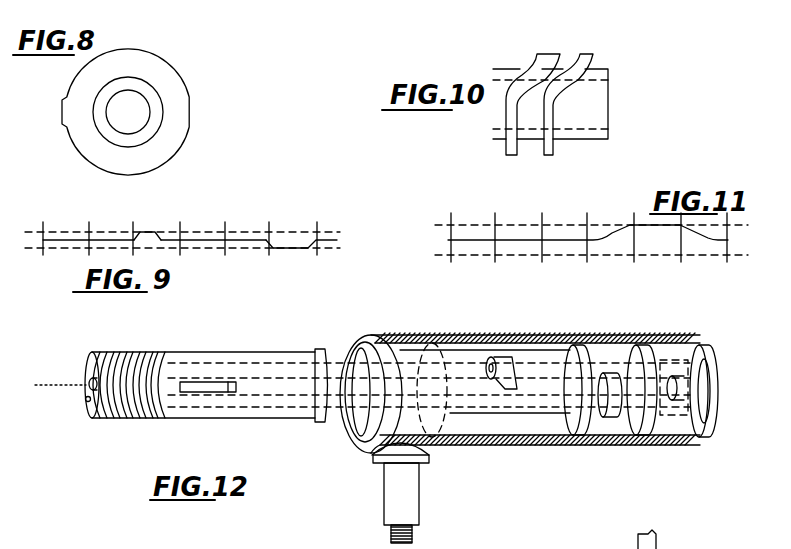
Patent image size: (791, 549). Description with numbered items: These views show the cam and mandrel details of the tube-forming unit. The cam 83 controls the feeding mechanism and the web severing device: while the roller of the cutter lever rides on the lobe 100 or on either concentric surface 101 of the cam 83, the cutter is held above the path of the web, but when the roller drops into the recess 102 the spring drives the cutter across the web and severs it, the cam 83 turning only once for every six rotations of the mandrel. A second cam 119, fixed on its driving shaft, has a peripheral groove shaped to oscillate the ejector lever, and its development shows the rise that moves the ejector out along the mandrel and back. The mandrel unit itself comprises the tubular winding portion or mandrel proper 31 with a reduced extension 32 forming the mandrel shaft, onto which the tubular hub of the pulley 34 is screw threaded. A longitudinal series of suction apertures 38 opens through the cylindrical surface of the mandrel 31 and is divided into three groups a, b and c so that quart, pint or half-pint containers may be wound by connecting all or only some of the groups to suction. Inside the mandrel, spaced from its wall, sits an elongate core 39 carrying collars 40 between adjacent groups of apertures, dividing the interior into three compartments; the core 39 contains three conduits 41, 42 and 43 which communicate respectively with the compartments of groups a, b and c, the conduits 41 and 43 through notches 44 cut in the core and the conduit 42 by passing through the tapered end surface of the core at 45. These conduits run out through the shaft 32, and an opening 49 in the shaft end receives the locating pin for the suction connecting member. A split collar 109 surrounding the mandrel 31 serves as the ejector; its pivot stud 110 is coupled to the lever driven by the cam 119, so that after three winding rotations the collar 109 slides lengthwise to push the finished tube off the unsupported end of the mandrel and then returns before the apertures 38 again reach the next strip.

In FIG. 8, the lobe 100 is at (63, 111).
In FIG. 9, the lobe 100 is at (144, 236).
In FIG. 8, the concentric surface 101 is at (152, 52).
In FIG. 9, the concentric surface 101 is at (97, 238).
In FIG. 8, the cam 83 is at (169, 89).
In FIG. 9, the cam 83 is at (268, 241).
In FIG. 8, the recess 102 is at (188, 126).
In FIG. 9, the recess 102 is at (293, 248).
In FIG. 10, the cam 119 is at (518, 82).
In FIG. 11, the cam 119 is at (610, 231).
In FIG. 12, the mandrel 31 is at (535, 392).
In FIG. 12, the extension 32 is at (200, 420).
In FIG. 12, the pulley 34 is at (658, 546).
In FIG. 12, the apertures 38 is at (517, 337).
In FIG. 12, the core 39 is at (507, 420).
In FIG. 12, the collars 40 is at (582, 342).
In FIG. 12, the conduit 41 is at (108, 352).
In FIG. 12, the conduit 42 is at (87, 382).
In FIG. 12, the conduit 43 is at (95, 403).
In FIG. 12, the notches 44 is at (507, 368).
In FIG. 12, the conduit outlet at tapered end 45 is at (696, 434).
In FIG. 12, the opening 49 is at (85, 402).
In FIG. 12, the split collar 109 is at (374, 449).
In FIG. 12, the pivot stud 110 is at (397, 498).
In FIG. 12, the group of apertures a is at (510, 337).
In FIG. 12, the group of apertures b is at (630, 342).
In FIG. 12, the group of apertures c is at (677, 337).